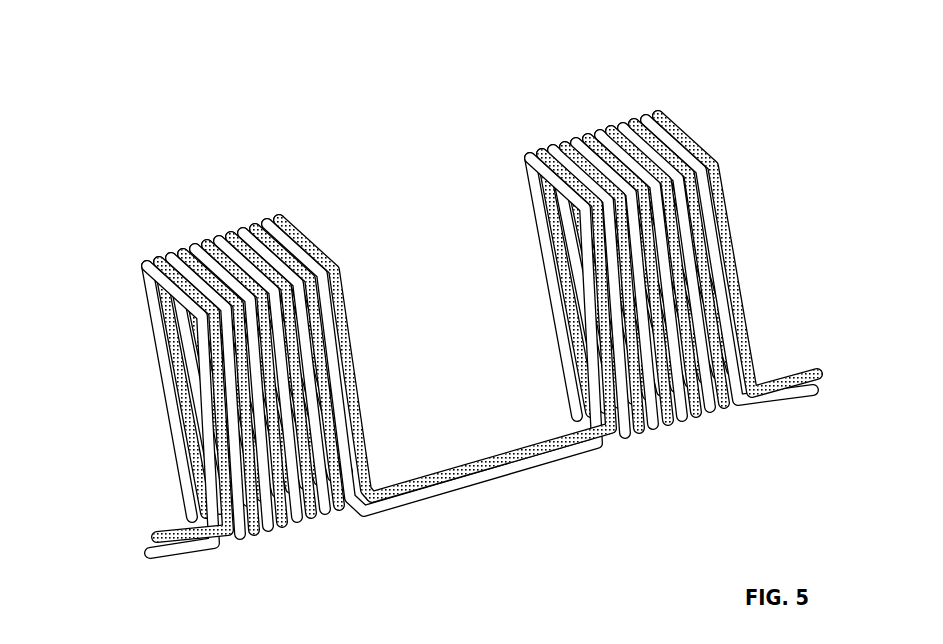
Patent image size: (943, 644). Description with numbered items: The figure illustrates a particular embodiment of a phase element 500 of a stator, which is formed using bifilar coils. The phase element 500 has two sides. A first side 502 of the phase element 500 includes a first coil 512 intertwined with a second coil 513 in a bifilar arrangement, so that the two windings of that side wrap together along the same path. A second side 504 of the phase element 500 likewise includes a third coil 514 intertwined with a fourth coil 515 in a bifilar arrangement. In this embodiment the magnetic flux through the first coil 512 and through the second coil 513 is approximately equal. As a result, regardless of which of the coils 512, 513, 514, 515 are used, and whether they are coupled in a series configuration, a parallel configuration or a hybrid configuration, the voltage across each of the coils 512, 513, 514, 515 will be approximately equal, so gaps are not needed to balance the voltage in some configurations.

The phase element 500 is at (439, 315).
The first side 502 is at (622, 260).
The second side 504 is at (336, 353).
The first coil 512 is at (657, 110).
The second coil 513 is at (533, 156).
The third coil 514 is at (206, 238).
The fourth coil 515 is at (147, 260).